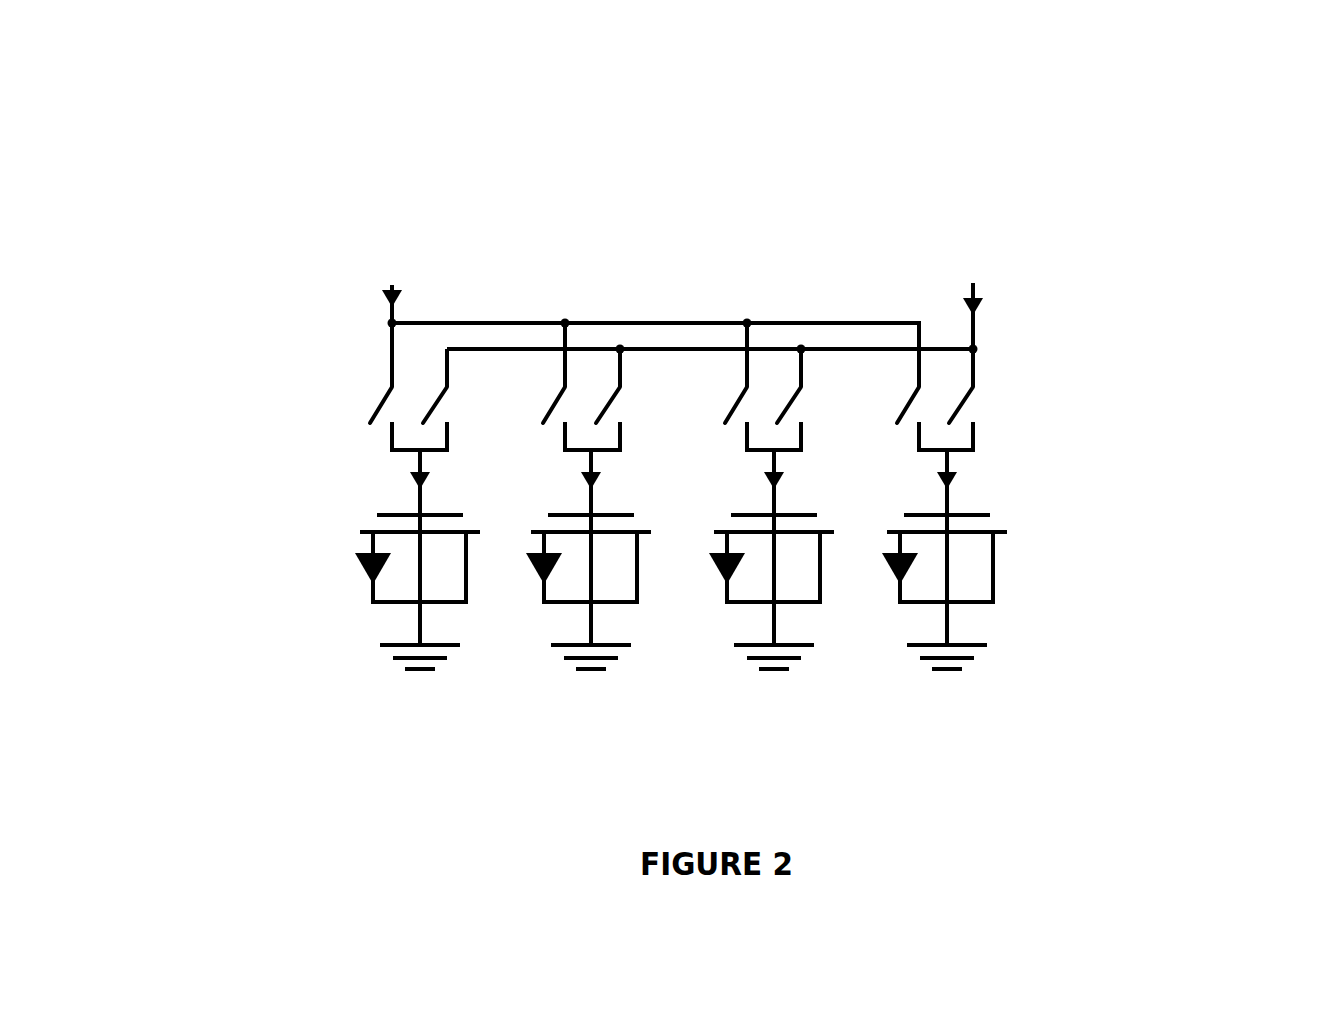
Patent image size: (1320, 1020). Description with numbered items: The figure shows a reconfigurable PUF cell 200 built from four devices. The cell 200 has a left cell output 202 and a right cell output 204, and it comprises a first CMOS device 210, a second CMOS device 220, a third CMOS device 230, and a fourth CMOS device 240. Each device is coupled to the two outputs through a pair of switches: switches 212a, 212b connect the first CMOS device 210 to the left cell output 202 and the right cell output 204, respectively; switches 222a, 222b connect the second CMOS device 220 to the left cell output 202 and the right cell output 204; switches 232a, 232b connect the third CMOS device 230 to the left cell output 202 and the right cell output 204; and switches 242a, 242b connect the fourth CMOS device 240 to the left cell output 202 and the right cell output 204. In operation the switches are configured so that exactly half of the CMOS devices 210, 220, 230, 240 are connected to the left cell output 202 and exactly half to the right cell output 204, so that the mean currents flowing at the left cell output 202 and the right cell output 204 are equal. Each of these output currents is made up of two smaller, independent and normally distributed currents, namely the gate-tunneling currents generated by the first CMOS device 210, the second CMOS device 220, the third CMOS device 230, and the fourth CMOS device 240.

The cell 200 is at (246, 88).
The left cell output 202 is at (333, 285).
The right cell output 204 is at (1030, 285).
The first CMOS device 210 is at (333, 568).
The switch 212a is at (365, 407).
The switch 212b is at (422, 394).
The second CMOS device 220 is at (540, 627).
The switch 222a is at (538, 393).
The switch 222b is at (632, 408).
The third CMOS device 230 is at (823, 618).
The switch 232a is at (728, 395).
The switch 232b is at (812, 403).
The fourth CMOS device 240 is at (1022, 613).
The switch 242a is at (937, 402).
The switch 242b is at (997, 410).